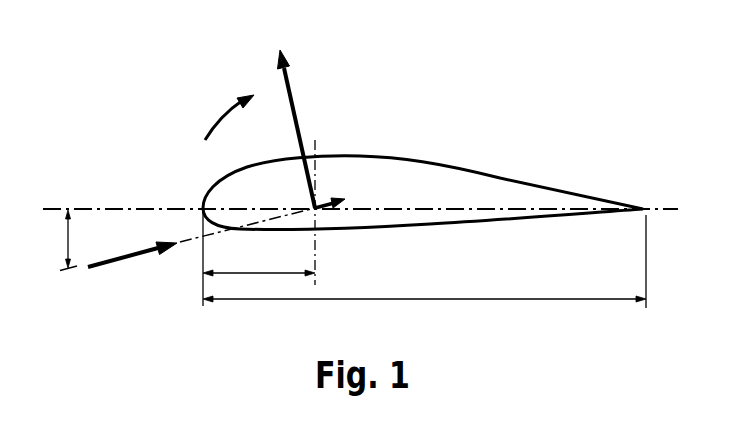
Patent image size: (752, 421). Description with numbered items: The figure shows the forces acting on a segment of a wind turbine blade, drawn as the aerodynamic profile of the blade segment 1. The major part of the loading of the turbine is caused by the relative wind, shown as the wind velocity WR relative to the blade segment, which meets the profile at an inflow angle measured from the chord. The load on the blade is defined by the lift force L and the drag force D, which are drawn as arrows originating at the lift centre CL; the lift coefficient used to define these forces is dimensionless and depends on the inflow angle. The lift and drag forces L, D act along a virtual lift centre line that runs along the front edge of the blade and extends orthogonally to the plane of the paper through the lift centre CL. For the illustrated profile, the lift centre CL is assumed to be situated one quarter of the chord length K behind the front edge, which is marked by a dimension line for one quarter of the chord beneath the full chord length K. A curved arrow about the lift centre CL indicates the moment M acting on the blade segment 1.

The blade segment 1 is at (427, 160).
The lift force L is at (290, 90).
The drag force D is at (322, 197).
The pitching moment M is at (221, 117).
The lift centre CL is at (298, 198).
The relative wind velocity WR is at (120, 262).
The chord length K is at (424, 261).